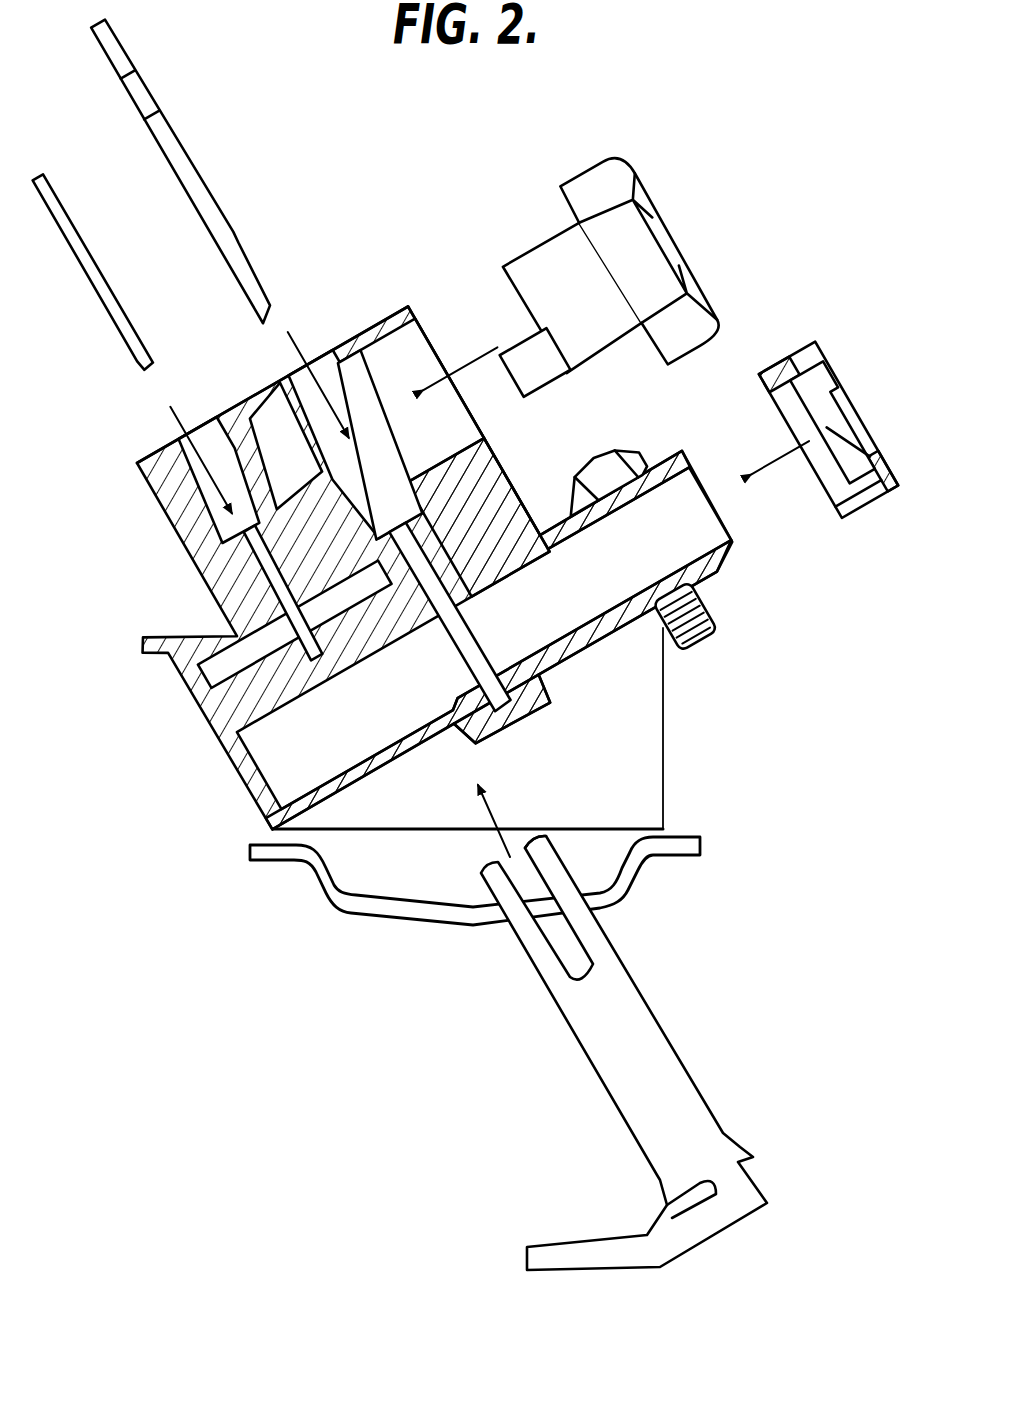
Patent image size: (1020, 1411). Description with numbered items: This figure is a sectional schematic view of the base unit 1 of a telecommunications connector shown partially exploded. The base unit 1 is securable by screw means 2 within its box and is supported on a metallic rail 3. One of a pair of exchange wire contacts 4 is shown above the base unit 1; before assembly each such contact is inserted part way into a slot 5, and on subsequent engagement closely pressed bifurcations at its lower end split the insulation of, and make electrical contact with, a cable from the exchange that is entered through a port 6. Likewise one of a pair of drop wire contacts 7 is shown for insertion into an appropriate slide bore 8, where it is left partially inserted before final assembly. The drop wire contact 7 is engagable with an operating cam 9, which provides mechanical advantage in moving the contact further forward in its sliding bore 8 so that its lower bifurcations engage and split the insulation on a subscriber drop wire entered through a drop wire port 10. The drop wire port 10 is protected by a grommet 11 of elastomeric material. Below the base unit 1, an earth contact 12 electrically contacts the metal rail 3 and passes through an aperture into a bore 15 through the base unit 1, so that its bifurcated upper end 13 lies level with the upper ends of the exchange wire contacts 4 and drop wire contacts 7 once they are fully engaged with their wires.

The base unit 1 is at (162, 674).
The screw means 2 is at (713, 622).
The metallic rail 3 is at (282, 857).
The exchange wire contact 4 is at (80, 247).
The slot 5 is at (262, 566).
The port 6 is at (247, 662).
The drop wire contact 7 is at (113, 50).
The slide bore 8 is at (488, 476).
The operating cam 9 is at (522, 353).
The drop wire port 10 is at (673, 498).
The grommet 11 is at (873, 483).
The earth contact 12 is at (650, 1052).
The bifurcated upper end 13 is at (553, 850).
The bore 15 is at (273, 443).